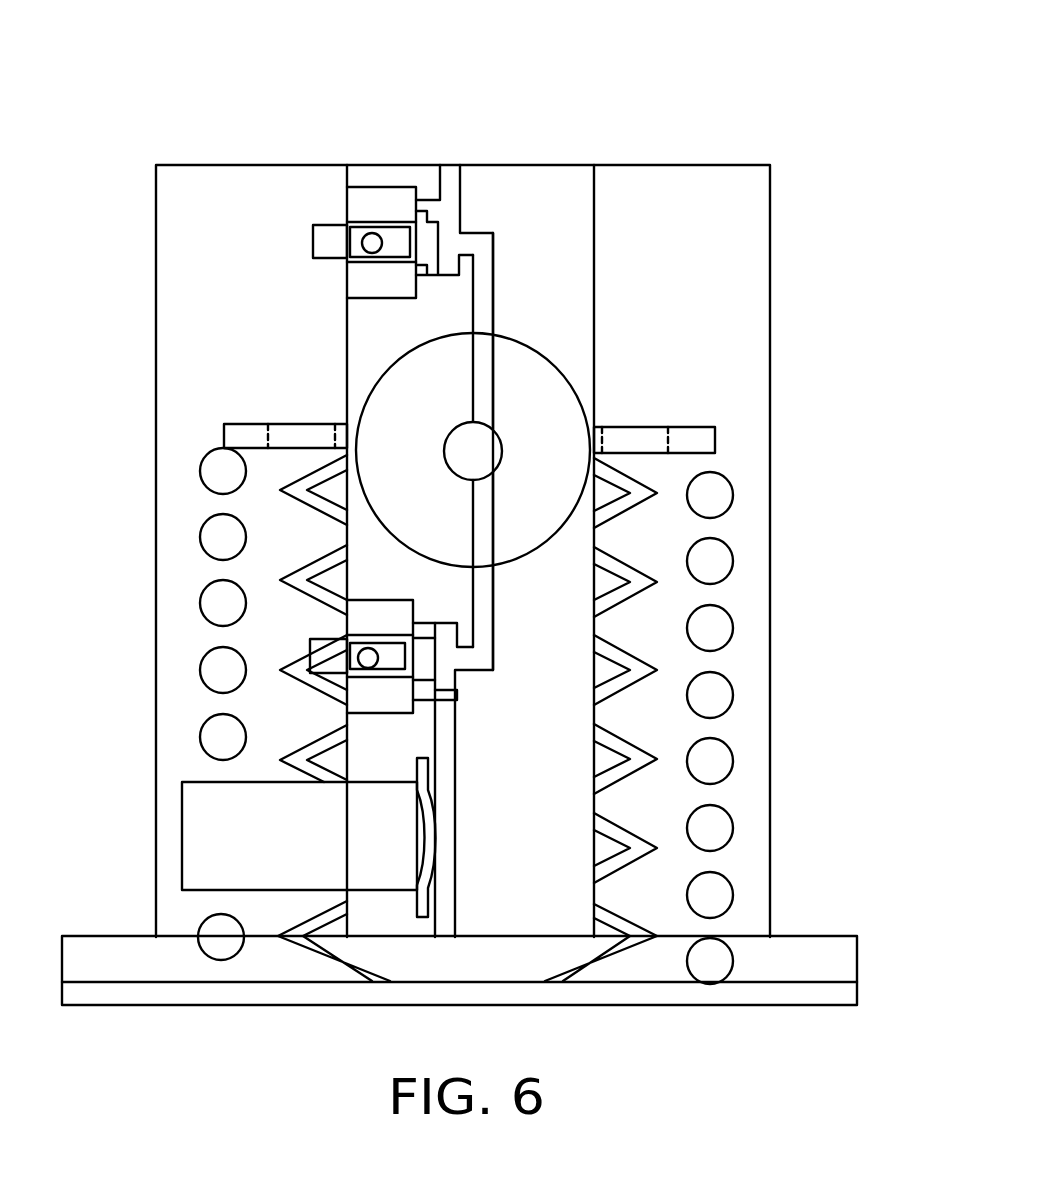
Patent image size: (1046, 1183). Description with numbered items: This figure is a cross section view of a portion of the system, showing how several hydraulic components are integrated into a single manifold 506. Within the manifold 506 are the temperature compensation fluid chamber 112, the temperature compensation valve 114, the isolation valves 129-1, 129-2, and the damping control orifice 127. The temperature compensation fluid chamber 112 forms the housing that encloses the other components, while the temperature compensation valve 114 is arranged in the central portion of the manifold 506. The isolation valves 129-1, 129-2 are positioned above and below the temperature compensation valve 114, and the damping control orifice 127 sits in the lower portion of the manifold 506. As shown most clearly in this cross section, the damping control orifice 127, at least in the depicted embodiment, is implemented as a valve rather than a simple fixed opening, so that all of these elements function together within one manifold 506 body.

The manifold 506 is at (790, 113).
The temperature compensation fluid chamber 112 is at (760, 330).
The temperature compensation valve 114 is at (558, 405).
The isolation valve 129-1 is at (308, 657).
The isolation valve 129-2 is at (333, 238).
The damping control orifice 127 is at (195, 833).